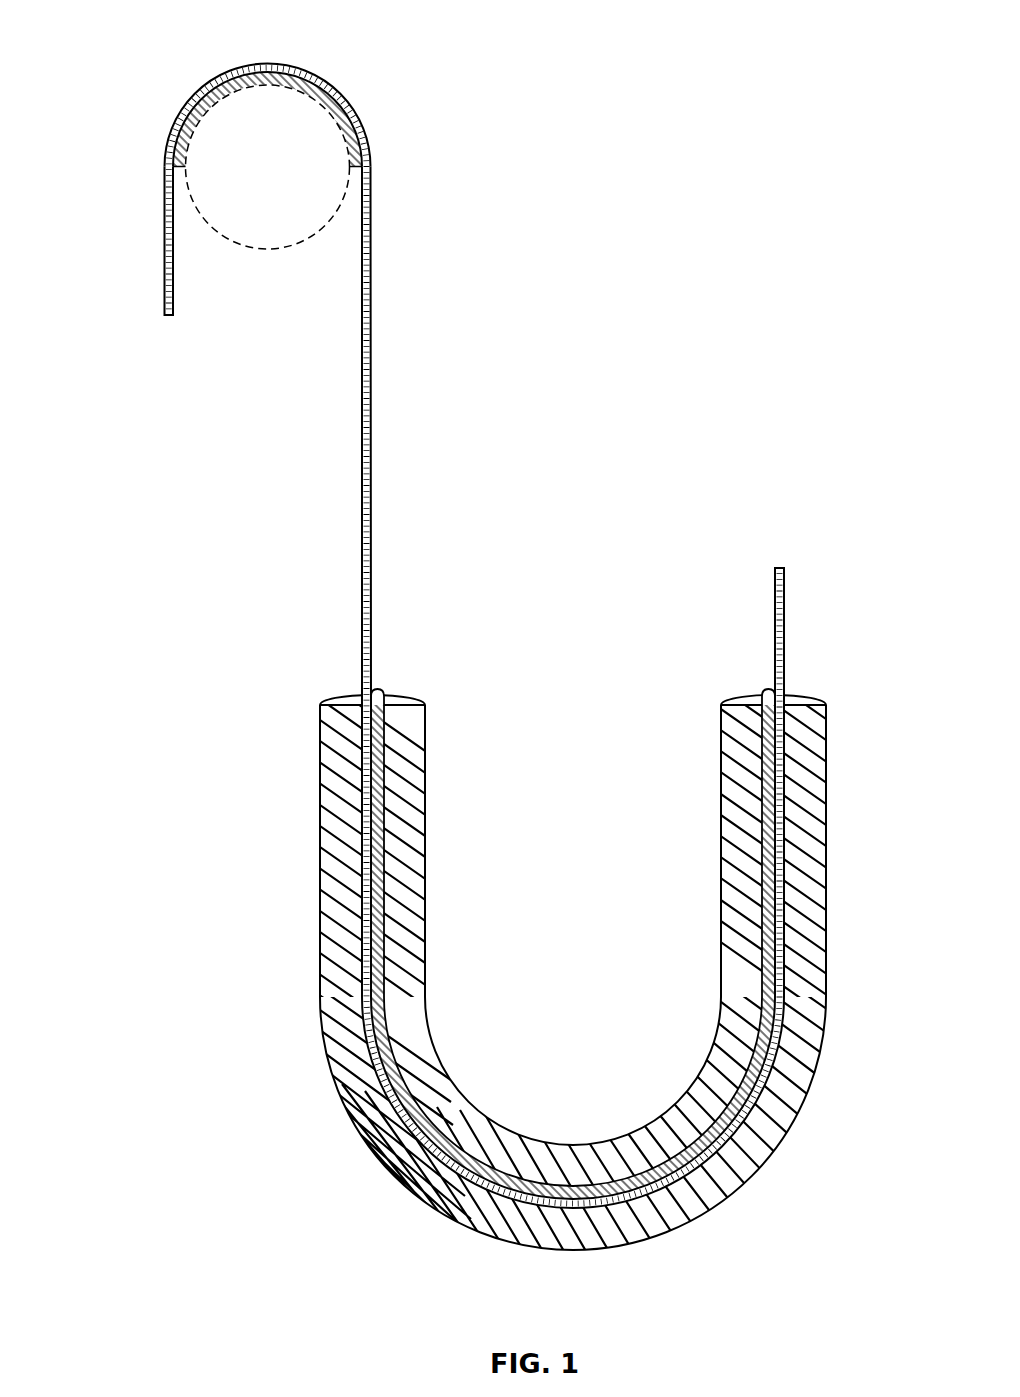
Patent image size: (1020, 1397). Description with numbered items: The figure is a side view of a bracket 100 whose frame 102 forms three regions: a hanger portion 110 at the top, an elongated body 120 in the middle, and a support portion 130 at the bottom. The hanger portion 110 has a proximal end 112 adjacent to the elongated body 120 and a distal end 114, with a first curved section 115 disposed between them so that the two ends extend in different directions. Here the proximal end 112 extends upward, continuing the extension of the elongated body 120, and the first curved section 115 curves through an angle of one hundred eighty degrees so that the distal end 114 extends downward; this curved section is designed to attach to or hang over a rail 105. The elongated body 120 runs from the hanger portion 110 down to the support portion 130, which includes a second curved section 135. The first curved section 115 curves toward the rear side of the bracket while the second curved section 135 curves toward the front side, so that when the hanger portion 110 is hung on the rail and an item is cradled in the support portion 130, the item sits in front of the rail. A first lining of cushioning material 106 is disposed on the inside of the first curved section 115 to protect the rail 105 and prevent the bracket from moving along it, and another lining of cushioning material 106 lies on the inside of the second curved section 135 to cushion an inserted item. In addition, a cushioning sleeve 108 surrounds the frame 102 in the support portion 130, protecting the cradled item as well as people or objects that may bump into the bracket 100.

The bracket 100 is at (494, 697).
The frame 102 is at (408, 607).
The rail 105 is at (288, 181).
The lining of cushioning material 106 is at (355, 118).
The cushioning sleeve 108 is at (547, 986).
The hanger portion 110 is at (201, 203).
The proximal end 112 is at (422, 277).
The distal end 114 is at (131, 315).
The first curved section 115 is at (260, 40).
The elongated body 120 is at (509, 716).
The support portion 130 is at (852, 818).
The second curved section 135 is at (563, 1275).